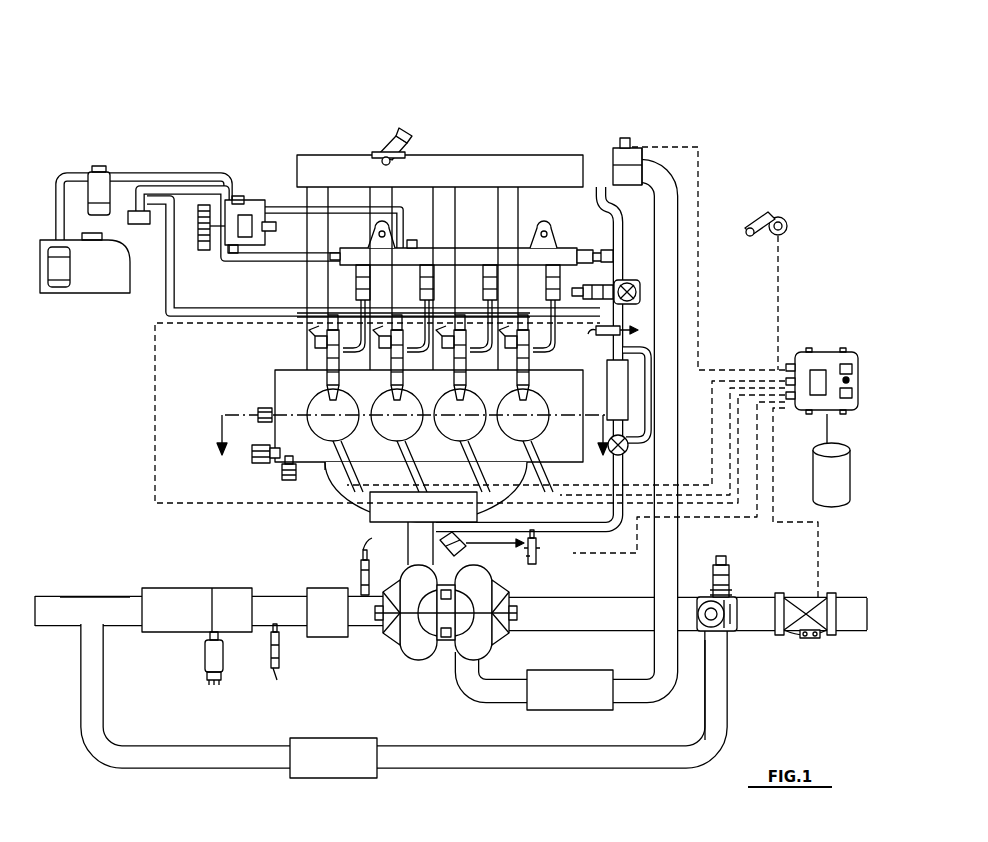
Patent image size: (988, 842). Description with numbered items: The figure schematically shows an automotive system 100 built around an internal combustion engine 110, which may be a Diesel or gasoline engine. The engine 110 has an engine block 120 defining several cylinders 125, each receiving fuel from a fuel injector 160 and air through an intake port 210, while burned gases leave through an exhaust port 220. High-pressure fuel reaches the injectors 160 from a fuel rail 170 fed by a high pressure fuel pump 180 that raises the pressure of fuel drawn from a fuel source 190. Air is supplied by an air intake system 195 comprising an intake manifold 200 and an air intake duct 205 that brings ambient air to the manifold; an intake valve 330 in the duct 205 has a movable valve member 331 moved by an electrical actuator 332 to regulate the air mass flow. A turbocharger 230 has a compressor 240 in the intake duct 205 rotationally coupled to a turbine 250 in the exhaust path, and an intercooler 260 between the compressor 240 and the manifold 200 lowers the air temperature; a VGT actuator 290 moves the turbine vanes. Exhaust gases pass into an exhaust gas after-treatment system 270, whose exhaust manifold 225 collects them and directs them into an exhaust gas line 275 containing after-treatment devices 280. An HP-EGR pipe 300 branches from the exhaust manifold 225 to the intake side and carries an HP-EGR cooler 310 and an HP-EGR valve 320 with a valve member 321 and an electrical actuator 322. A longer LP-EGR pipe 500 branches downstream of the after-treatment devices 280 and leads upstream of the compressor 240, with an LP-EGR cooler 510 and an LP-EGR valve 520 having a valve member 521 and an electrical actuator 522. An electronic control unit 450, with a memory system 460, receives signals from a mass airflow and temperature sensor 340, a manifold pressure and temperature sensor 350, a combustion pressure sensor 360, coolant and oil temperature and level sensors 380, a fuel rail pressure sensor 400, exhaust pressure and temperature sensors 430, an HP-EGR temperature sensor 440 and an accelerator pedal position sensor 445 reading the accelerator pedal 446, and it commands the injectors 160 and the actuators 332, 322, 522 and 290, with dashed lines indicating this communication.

The automotive system 100 is at (209, 136).
The internal combustion engine 110 is at (538, 138).
The engine block 120 is at (275, 372).
The cylinder 125 is at (546, 396).
The fuel injector 160 is at (332, 353).
The fuel rail 170 is at (332, 262).
The high pressure fuel pump 180 is at (256, 190).
The fuel source 190 is at (103, 277).
The air intake system 195 is at (500, 118).
The intake manifold 200 is at (448, 178).
The air intake duct 205 is at (619, 618).
The intake port 210 is at (316, 373).
The exhaust port 220 is at (332, 464).
The exhaust manifold 225 is at (398, 515).
The turbocharger 230 is at (411, 678).
The compressor 240 is at (470, 642).
The turbine 250 is at (417, 637).
The intercooler 260 is at (566, 694).
The exhaust gas after-treatment system 270 is at (176, 572).
The exhaust gas line 275 is at (70, 610).
The exhaust after-treatment device 280 is at (153, 634).
The VGT actuator 290 is at (455, 552).
The HP-EGR pipe 300 is at (592, 545).
The HP-EGR cooler 310 is at (619, 406).
The HP-EGR valve 320 is at (605, 252).
The valve member 321 is at (629, 281).
The electrical actuator 322 is at (637, 300).
The intake valve 330 is at (623, 148).
The valve member 331 is at (643, 150).
The electrical actuator 332 is at (623, 138).
The mass airflow and temperature sensor 340 is at (820, 640).
The manifold pressure and temperature sensor 350 is at (392, 143).
The combustion pressure sensor 360 is at (344, 474).
The coolant and oil temperature and level sensors 380 is at (288, 465).
The fuel rail pressure sensor 400 is at (684, 147).
The exhaust pressure and temperature sensors 430 is at (275, 682).
The HP-EGR temperature sensor 440 is at (624, 333).
The accelerator pedal position sensor 445 is at (781, 216).
The accelerator pedal 446 is at (760, 222).
The electronic control unit 450 is at (827, 352).
The memory system 460 is at (832, 492).
The LP-EGR pipe 500 is at (199, 752).
The LP-EGR cooler 510 is at (345, 760).
The LP-EGR valve 520 is at (728, 655).
The valve member 521 is at (735, 625).
The electrical actuator 522 is at (728, 574).